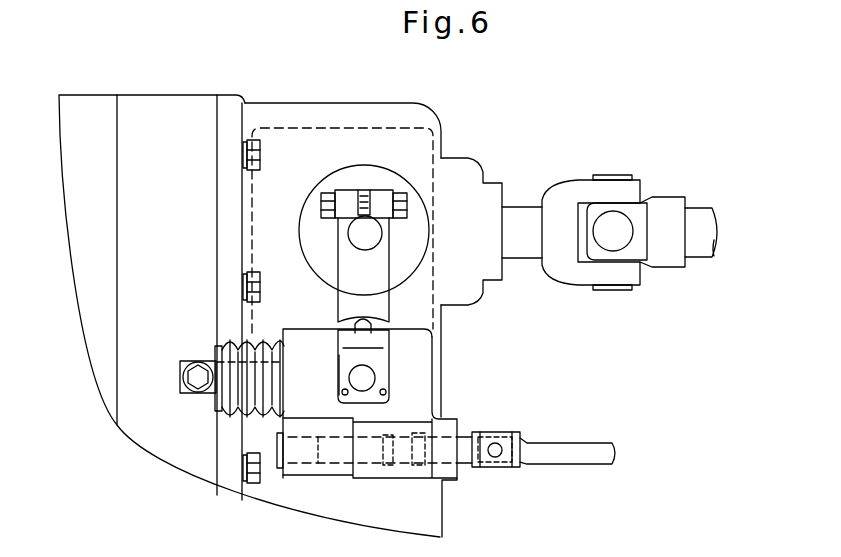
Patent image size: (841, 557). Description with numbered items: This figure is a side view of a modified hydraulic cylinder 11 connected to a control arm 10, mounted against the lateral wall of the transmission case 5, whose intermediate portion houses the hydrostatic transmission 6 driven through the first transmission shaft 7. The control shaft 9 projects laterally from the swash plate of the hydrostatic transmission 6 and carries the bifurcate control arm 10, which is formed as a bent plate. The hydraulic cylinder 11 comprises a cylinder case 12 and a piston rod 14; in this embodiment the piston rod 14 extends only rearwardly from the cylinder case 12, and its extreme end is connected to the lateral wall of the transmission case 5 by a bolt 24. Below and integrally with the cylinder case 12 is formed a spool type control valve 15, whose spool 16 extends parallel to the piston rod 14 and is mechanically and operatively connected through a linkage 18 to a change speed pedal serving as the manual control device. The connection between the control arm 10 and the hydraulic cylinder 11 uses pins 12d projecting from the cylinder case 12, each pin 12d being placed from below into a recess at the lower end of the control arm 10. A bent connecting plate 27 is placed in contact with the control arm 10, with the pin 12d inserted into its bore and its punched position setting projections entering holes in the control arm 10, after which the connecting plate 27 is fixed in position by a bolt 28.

The transmission case 5 is at (101, 102).
The hydrostatic transmission 6 is at (327, 130).
The first transmission shaft 7 is at (700, 212).
The control shaft 9 is at (353, 233).
The control arm 10 is at (343, 275).
The hydraulic cylinder 11 is at (432, 351).
The cylinder case 12 is at (410, 330).
The pins 12d is at (345, 375).
The piston rod 14 is at (227, 345).
The control valve 15 is at (372, 477).
The spool 16 is at (336, 460).
The linkage 18 is at (580, 444).
The bolt 24 is at (194, 383).
The connecting plate 27 is at (385, 372).
The bolt 28 is at (353, 318).